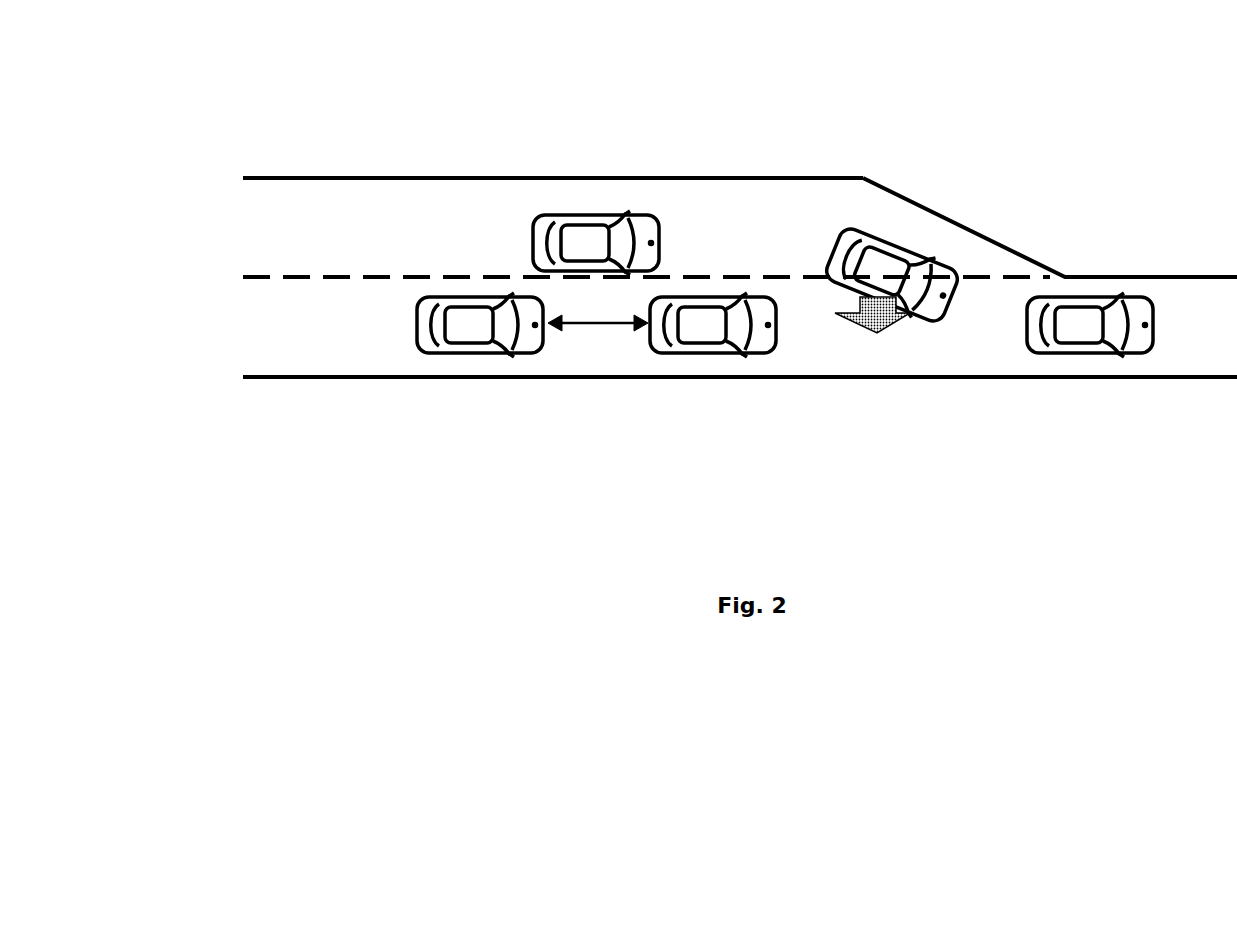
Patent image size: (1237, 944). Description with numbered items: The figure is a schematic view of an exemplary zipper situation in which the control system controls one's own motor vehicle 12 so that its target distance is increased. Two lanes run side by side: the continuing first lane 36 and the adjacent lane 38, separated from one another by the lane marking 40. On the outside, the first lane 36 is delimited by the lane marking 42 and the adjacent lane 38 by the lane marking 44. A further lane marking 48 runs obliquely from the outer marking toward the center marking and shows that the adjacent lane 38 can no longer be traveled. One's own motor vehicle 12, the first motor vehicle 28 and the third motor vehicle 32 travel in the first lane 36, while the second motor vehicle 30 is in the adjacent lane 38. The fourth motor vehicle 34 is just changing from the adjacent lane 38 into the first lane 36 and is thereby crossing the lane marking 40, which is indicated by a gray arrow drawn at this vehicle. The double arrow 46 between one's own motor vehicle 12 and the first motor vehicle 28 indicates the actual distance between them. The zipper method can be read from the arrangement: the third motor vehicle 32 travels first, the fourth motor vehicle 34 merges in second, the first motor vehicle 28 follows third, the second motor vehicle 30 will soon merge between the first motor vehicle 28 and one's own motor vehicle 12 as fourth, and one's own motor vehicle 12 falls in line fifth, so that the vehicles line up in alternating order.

The own motor vehicle 12 is at (483, 353).
The first motor vehicle 28 is at (723, 353).
The second motor vehicle 30 is at (592, 216).
The third motor vehicle 32 is at (1092, 353).
The fourth motor vehicle 34 is at (890, 247).
The first lane 36 is at (335, 357).
The adjacent lane 38 is at (322, 198).
The lane marking 40 is at (243, 277).
The lane marking 42 is at (243, 377).
The lane marking 44 is at (243, 178).
The double arrow 46 is at (593, 324).
The lane marking 48 is at (970, 227).